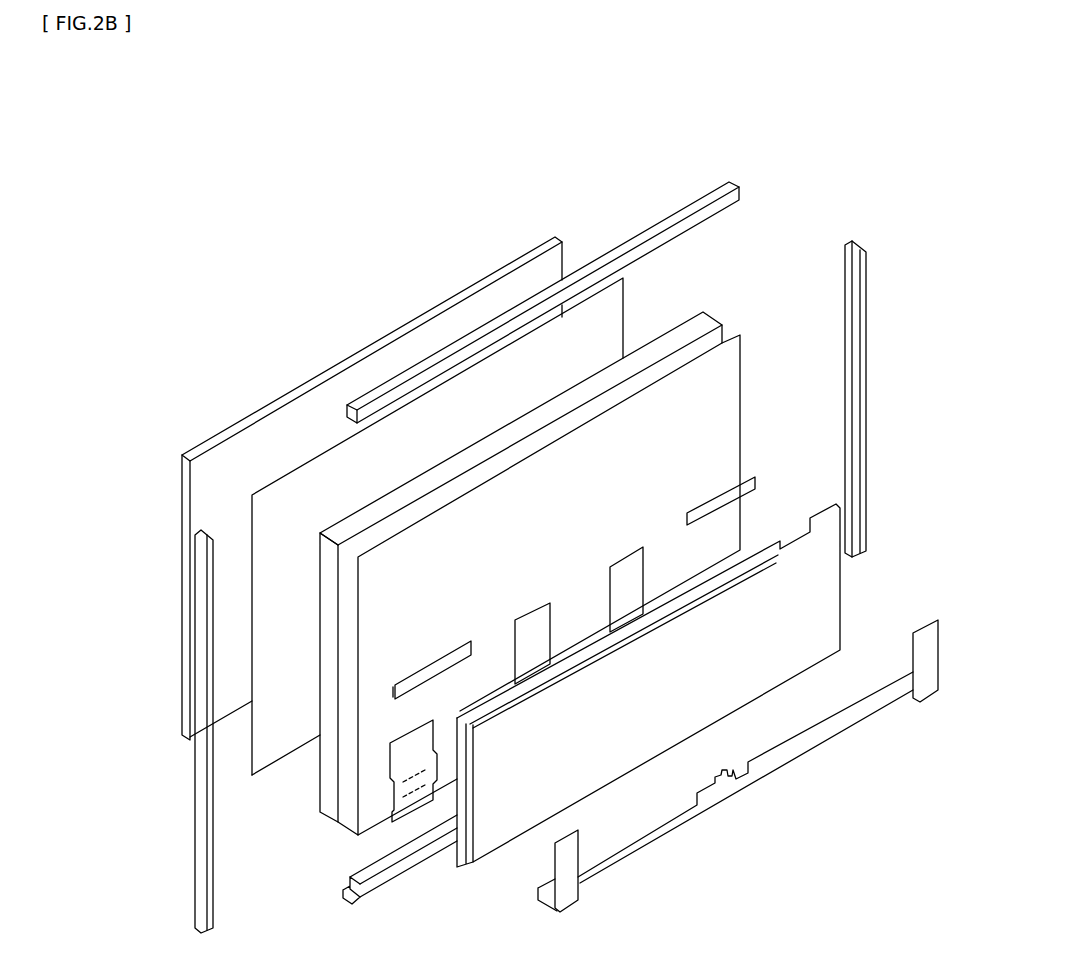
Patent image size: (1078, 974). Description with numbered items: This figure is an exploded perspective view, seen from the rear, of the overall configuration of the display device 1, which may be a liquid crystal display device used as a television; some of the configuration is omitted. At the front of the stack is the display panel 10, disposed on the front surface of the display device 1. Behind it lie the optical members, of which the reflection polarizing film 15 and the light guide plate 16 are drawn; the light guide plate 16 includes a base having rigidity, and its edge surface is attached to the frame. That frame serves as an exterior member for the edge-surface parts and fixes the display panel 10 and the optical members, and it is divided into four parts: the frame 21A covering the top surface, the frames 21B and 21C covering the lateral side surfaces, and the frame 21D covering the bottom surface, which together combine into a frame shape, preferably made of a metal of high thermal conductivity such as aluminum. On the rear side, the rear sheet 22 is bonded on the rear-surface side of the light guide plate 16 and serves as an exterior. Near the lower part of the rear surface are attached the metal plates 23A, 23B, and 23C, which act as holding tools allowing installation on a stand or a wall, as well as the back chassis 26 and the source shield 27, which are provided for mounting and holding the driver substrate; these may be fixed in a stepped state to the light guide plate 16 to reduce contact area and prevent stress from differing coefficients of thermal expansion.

The display device 1 is at (824, 147).
The display panel 10 is at (563, 240).
The reflection polarizing film 15 is at (618, 307).
The light guide plate 16 is at (703, 322).
The frame 21A is at (733, 187).
The frame 21B is at (855, 300).
The frame 21C is at (198, 600).
The frame 21D is at (393, 872).
The rear sheet 22 is at (732, 383).
The metal plate 23A is at (392, 797).
The metal plate 23B is at (525, 640).
The metal plate 23C is at (395, 692).
The back chassis 26 is at (833, 575).
The source shield 27 is at (613, 850).